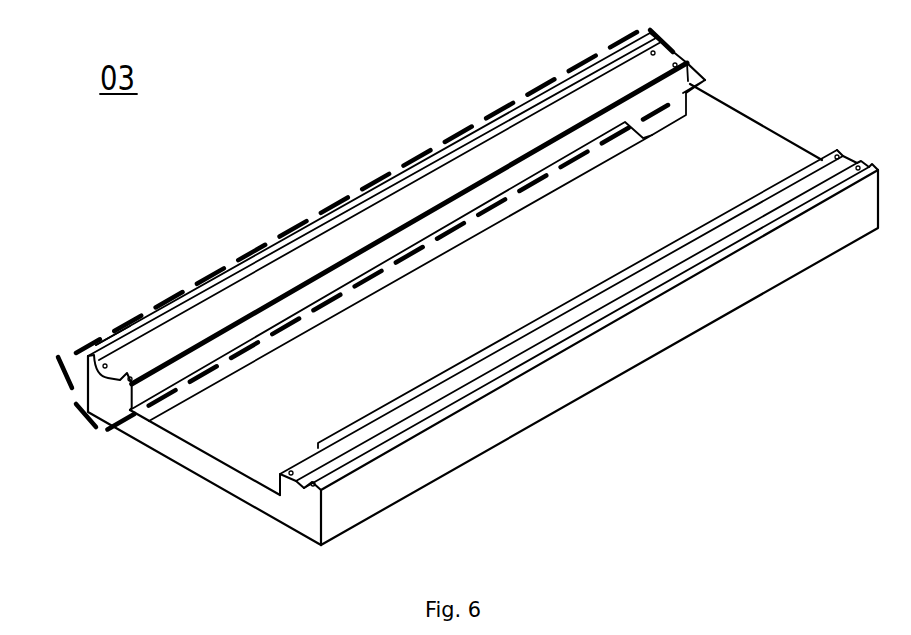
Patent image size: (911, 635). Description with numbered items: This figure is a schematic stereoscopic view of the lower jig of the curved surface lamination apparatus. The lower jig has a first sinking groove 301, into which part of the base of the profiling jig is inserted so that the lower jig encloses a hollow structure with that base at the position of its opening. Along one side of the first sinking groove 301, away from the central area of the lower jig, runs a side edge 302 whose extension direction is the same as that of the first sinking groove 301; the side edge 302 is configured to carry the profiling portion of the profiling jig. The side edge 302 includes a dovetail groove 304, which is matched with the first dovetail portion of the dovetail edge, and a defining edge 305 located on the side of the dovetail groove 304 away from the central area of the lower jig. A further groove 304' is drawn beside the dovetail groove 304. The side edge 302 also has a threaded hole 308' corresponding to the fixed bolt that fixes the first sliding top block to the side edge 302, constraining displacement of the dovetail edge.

The first sinking groove 301 is at (278, 336).
The side edge 302 is at (372, 182).
The dovetail groove 304 is at (484, 279).
The guide rail 304' is at (387, 208).
The defining edge 305 is at (248, 258).
The threaded hole 308' is at (79, 317).